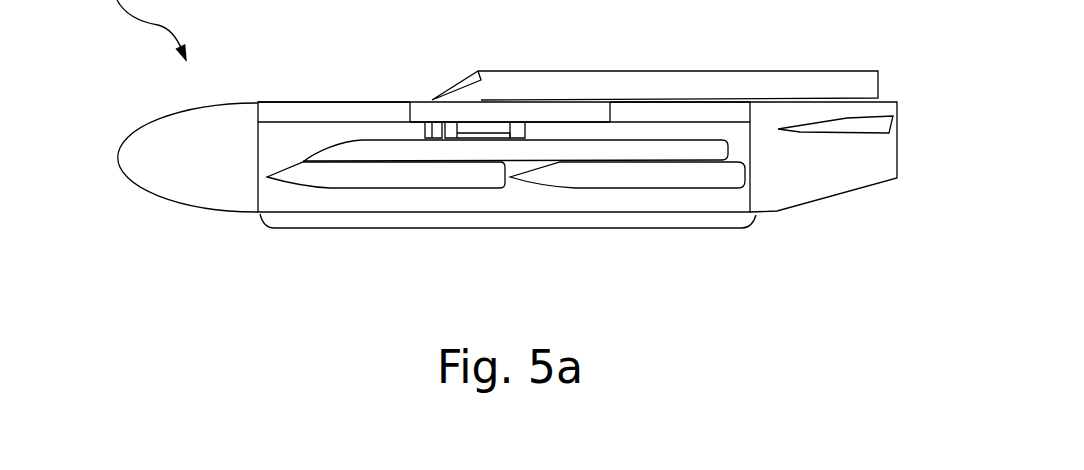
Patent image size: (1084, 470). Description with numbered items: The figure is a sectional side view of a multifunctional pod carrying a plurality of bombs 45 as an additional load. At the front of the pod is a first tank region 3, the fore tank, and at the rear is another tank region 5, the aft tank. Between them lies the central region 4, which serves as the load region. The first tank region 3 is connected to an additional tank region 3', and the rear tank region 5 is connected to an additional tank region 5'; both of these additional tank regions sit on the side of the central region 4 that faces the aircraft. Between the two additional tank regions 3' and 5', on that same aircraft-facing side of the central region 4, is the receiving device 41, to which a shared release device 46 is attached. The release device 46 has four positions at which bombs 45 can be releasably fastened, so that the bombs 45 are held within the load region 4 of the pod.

The first tank region 3 is at (188, 184).
The additional tank region 3' is at (334, 71).
The central region 4 is at (505, 228).
The receiving device 41 is at (570, 150).
The bombs 45 is at (373, 177).
The release device 46 is at (408, 150).
The tank region 5 is at (823, 188).
The additional tank region 5' is at (680, 69).